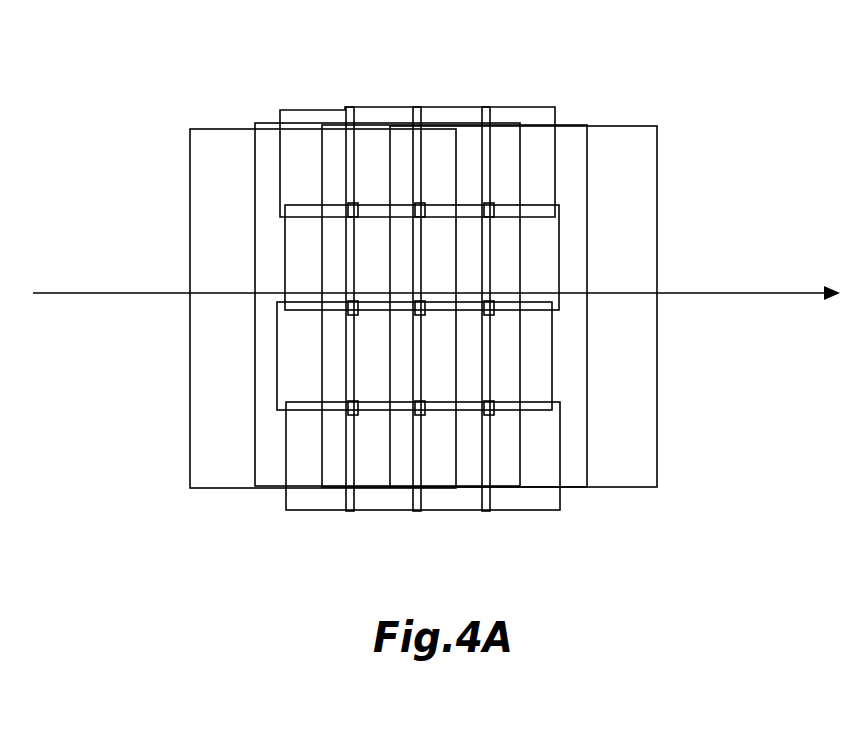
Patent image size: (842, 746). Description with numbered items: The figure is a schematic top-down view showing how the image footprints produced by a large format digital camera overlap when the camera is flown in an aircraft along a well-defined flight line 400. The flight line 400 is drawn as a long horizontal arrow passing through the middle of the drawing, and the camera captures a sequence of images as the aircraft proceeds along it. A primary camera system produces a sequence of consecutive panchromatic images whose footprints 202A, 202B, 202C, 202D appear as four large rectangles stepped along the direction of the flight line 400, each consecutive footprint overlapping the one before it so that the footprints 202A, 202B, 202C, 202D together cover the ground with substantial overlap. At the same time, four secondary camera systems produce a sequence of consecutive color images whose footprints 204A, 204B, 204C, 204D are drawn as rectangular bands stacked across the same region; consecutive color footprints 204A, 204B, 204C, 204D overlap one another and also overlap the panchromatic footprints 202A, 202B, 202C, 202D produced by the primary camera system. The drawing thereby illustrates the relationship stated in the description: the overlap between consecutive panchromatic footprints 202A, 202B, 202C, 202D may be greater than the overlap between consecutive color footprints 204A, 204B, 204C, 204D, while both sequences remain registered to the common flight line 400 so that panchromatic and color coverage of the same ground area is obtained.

The footprint 202A is at (212, 129).
The footprint 202B is at (268, 124).
The footprint 202C is at (580, 133).
The footprint 202D is at (640, 136).
The footprint 204A is at (298, 462).
The footprint 204B is at (291, 375).
The footprint 204C is at (294, 269).
The footprint 204D is at (283, 164).
The flight line 400 is at (760, 294).